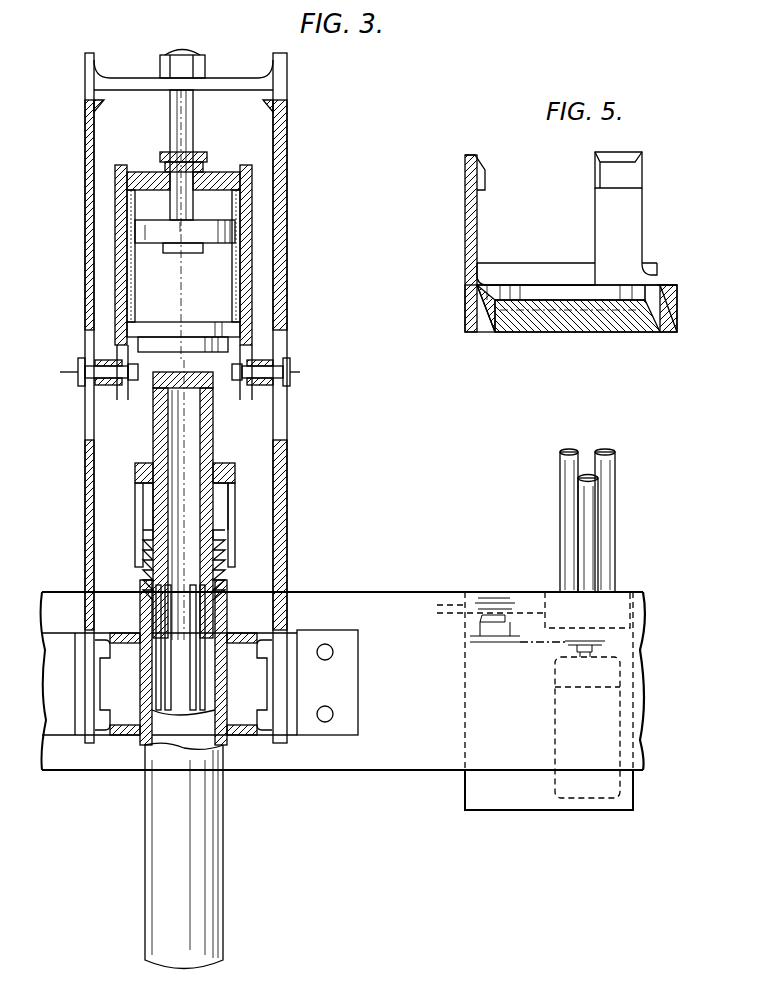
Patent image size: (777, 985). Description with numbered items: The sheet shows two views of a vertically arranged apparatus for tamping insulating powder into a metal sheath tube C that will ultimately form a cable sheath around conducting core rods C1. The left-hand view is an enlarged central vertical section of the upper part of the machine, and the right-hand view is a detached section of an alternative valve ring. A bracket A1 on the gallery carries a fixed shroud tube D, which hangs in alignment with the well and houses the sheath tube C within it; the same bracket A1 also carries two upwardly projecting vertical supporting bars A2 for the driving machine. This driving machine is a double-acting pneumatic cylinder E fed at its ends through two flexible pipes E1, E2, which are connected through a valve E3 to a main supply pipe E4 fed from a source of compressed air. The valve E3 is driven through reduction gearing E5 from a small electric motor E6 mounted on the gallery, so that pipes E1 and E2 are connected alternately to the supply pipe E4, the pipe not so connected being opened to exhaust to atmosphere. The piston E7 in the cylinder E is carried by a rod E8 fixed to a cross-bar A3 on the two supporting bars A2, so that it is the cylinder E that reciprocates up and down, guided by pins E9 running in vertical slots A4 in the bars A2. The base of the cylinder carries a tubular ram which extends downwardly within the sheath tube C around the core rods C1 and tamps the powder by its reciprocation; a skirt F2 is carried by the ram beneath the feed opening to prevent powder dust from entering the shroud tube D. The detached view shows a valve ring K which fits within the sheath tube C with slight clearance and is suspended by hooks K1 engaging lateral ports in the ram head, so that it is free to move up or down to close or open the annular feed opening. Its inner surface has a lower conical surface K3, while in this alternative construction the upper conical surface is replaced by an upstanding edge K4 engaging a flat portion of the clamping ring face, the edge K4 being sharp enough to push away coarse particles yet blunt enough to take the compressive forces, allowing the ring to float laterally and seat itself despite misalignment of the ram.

In FIG. 3, the bracket A1 is at (62, 722).
In FIG. 3, the bars A2 is at (86, 500).
In FIG. 3, the cross-bar A3 is at (128, 78).
In FIG. 3, the vertical slots A4 is at (86, 420).
In FIG. 3, the metal tube C is at (140, 630).
In FIG. 3, the conducting rods C1 is at (168, 606).
In FIG. 3, the shroud tube D is at (224, 834).
In FIG. 3, the double-acting pneumatic cylinder E is at (240, 272).
In FIG. 3, the flexible pipe E1 is at (608, 450).
In FIG. 3, the flexible pipe E2 is at (574, 450).
In FIG. 3, the valve E3 is at (628, 600).
In FIG. 3, the main supply pipe E4 is at (600, 537).
In FIG. 3, the reduction gearing E5 is at (482, 598).
In FIG. 3, the electric motor E6 is at (634, 773).
In FIG. 3, the piston E7 is at (236, 225).
In FIG. 3, the rod E8 is at (178, 108).
In FIG. 3, the pins E9 is at (78, 376).
In FIG. 3, the skirt F2 is at (236, 508).
In FIG. 5, the valve ring K is at (678, 303).
In FIG. 5, the hooks K1 is at (486, 172).
In FIG. 5, the conical surface K3 is at (490, 320).
In FIG. 5, the upstanding edge K4 is at (475, 283).